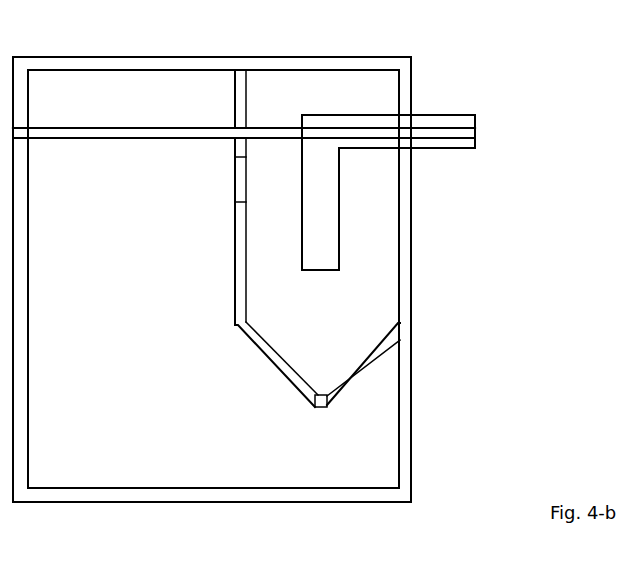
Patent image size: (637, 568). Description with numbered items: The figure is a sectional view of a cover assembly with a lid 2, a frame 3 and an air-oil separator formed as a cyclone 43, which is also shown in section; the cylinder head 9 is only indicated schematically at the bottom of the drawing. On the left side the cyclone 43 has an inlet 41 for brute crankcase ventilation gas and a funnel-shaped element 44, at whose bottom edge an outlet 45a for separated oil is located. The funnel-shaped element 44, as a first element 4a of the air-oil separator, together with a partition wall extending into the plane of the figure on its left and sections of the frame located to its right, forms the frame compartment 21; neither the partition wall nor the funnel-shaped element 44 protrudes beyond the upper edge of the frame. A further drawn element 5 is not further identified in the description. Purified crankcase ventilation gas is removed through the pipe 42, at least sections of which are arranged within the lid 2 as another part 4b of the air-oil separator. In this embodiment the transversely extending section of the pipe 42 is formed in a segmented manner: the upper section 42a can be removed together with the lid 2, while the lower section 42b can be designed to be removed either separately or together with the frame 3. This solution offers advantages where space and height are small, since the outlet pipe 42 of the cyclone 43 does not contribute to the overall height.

The lid 2 is at (87, 56).
The frame 3 is at (407, 240).
The partition plate 5 is at (182, 137).
The frame compartment 21 is at (275, 90).
The inlet 41 is at (238, 180).
The pipe 42 is at (465, 135).
The upper section of the pipe 42a is at (320, 122).
The lower guide portion 42b is at (405, 135).
The first element of the air-oil separator 4a is at (367, 292).
The another part of the air-oil separator 4b is at (382, 125).
The cyclone 43 is at (337, 307).
The funnel-shaped element 44 is at (253, 333).
The outlet 45a is at (328, 403).
The cylinder head 9 is at (291, 547).